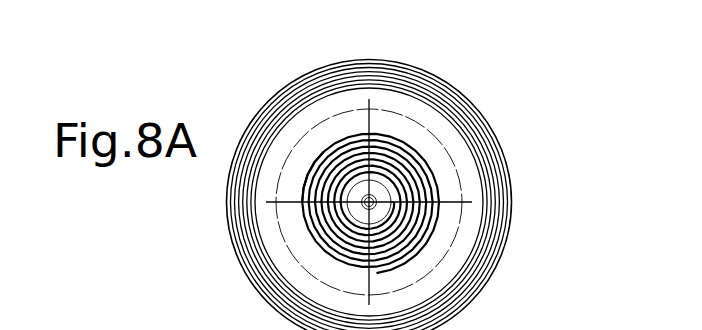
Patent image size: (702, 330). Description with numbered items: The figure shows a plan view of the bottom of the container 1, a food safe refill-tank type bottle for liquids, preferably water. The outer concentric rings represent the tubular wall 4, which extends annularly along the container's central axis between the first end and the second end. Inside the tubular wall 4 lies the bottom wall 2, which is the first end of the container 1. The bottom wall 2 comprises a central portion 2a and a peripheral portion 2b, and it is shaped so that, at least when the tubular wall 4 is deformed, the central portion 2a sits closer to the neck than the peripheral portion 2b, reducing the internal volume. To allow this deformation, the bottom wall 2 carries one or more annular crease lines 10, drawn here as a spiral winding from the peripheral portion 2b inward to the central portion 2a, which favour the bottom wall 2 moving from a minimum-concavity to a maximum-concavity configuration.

The container 1 is at (508, 134).
The bottom wall 2 is at (430, 270).
The central portion 2a is at (355, 187).
The peripheral portion 2b is at (313, 249).
The tubular wall 4 is at (482, 108).
The annular crease line 10 is at (379, 157).